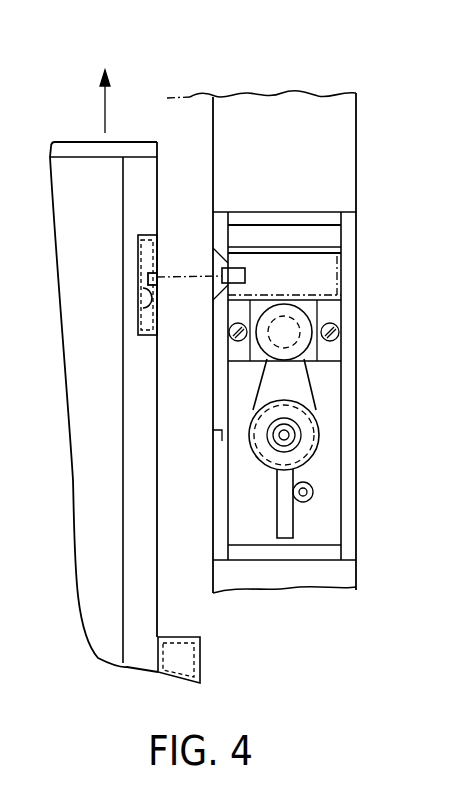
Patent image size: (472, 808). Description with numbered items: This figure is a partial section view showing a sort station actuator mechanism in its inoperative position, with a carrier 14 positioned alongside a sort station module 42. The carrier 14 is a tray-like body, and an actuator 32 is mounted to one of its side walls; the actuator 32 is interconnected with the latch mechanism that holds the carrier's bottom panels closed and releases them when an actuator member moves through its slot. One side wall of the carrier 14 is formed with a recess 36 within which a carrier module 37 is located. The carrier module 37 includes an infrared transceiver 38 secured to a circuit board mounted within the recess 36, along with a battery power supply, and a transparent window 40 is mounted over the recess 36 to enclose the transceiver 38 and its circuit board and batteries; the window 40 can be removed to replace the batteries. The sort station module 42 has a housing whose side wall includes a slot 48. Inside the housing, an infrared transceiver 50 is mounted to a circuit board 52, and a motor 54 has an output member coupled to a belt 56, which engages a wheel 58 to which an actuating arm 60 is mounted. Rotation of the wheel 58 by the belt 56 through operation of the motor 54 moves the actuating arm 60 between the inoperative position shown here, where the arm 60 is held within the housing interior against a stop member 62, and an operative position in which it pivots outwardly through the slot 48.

The carrier 14 is at (78, 124).
The actuator 32 is at (180, 636).
The recess 36 is at (150, 309).
The carrier module 37 is at (156, 247).
The infrared transceiver 38 is at (156, 277).
The transparent window 40 is at (160, 298).
The sort station module 42 is at (331, 194).
The slot 48 is at (221, 443).
The infrared transceiver 50 is at (240, 266).
The circuit board 52 is at (325, 268).
The motor 54 is at (310, 313).
The belt 56 is at (313, 387).
The wheel 58 is at (317, 432).
The actuating arm 60 is at (297, 528).
The stop member 62 is at (313, 500).